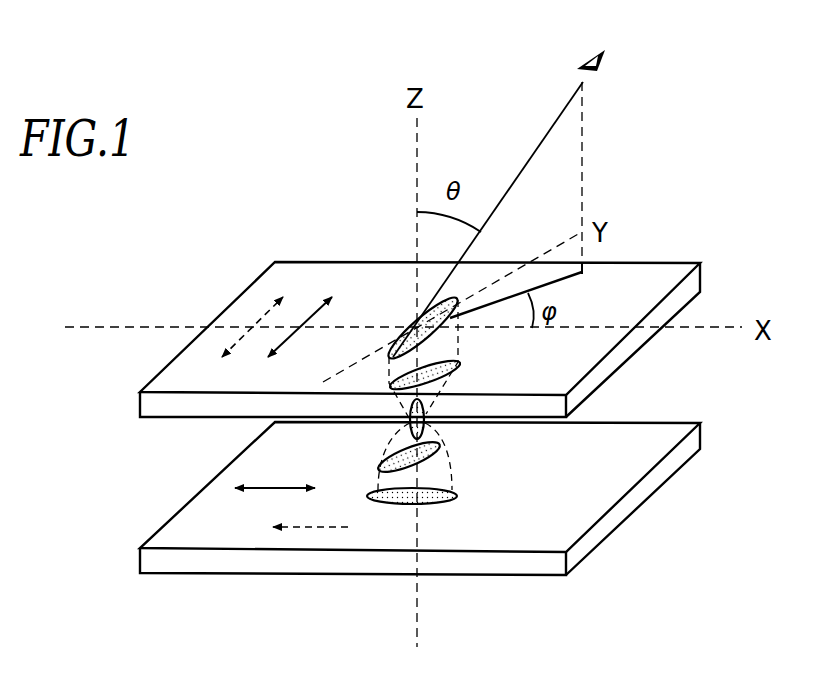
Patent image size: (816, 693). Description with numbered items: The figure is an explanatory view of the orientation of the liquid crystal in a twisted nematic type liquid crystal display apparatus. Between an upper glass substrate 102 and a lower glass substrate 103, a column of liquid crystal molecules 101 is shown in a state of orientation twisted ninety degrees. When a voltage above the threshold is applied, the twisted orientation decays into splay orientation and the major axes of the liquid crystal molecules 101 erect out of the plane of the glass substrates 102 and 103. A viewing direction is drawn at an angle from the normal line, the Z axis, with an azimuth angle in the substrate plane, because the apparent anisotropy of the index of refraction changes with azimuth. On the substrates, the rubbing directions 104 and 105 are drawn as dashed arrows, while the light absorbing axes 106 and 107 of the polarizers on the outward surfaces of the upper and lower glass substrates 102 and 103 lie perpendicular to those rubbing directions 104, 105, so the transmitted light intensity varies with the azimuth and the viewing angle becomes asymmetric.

The liquid crystal molecules 101 is at (440, 502).
The upper glass substrate 102 is at (692, 282).
The lower glass substrate 103 is at (668, 468).
The rubbing direction 104 is at (253, 322).
The rubbing direction 105 is at (320, 527).
The light absorbing axis 106 is at (313, 308).
The light absorbing axis 107 is at (268, 488).